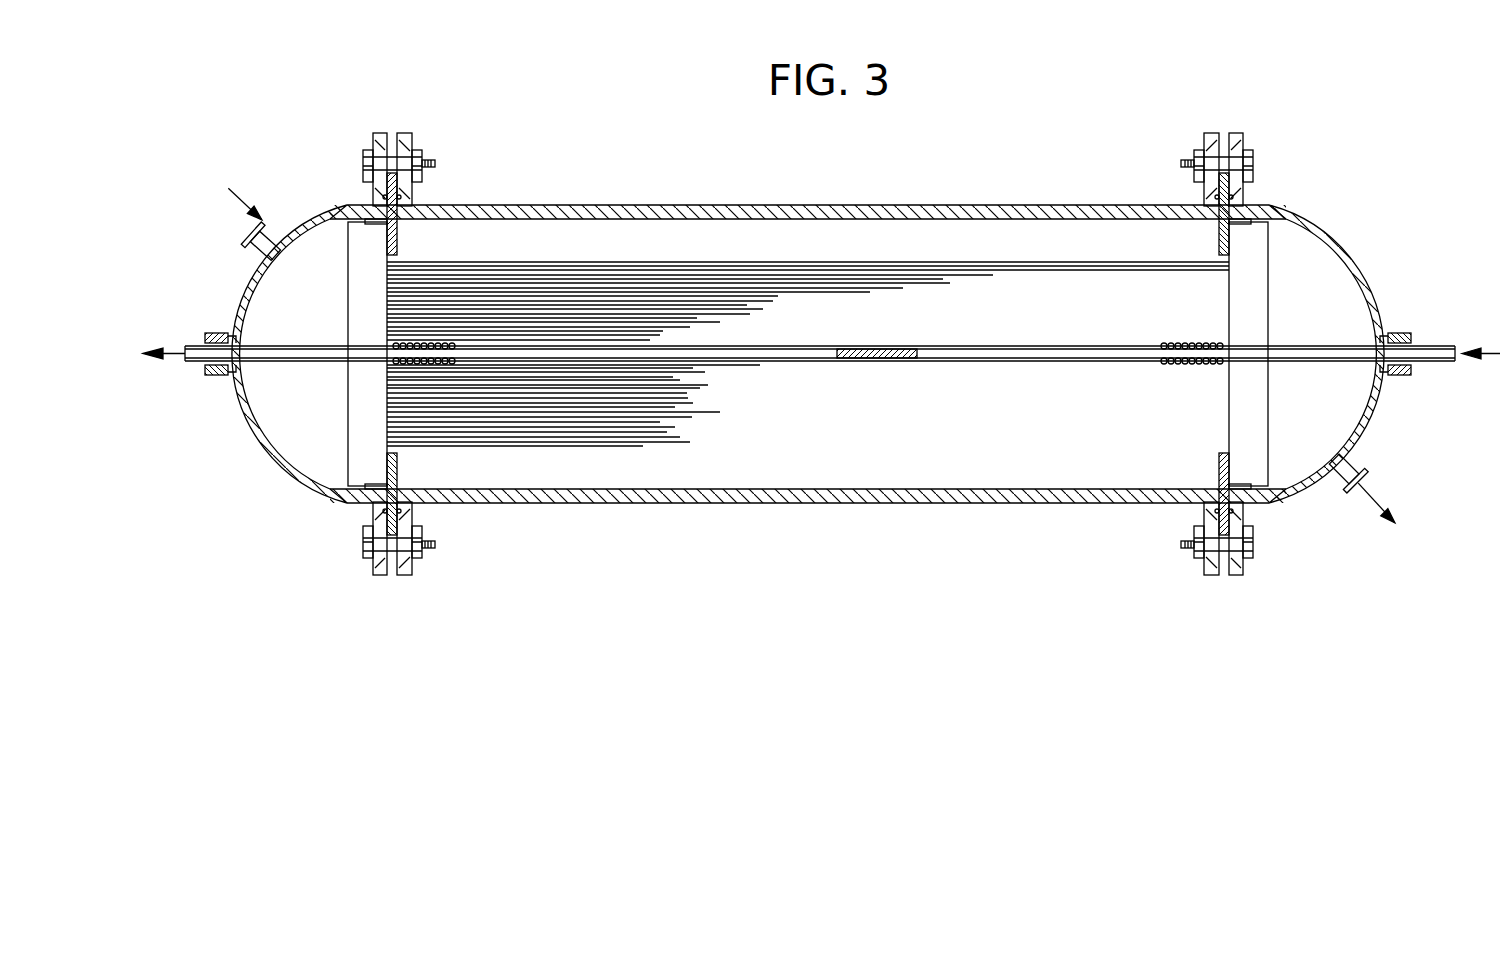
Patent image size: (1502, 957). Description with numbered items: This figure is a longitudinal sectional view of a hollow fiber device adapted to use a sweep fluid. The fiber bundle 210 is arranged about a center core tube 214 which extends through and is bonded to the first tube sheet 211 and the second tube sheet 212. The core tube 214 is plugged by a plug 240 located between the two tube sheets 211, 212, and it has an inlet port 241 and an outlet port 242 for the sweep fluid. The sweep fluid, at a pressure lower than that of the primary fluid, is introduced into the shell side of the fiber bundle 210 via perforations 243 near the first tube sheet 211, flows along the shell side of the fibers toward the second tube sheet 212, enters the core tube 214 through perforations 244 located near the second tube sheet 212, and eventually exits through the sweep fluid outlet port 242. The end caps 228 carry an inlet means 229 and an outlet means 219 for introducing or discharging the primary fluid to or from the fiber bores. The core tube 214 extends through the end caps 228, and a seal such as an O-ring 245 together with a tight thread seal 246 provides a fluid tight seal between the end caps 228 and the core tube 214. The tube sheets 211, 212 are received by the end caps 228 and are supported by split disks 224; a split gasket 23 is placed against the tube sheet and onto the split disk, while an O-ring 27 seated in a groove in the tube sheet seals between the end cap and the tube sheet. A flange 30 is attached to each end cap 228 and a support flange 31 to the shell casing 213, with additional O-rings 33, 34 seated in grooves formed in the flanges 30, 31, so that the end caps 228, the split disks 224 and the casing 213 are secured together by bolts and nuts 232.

The split gasket 23 is at (385, 455).
The O-ring 27 is at (372, 207).
The flange 30 is at (371, 141).
The support flange 31 is at (413, 141).
The O-ring 33 is at (374, 512).
The O-ring 34 is at (412, 512).
The fiber bundle 210 is at (812, 285).
The first tube sheet 211 is at (1263, 323).
The second tube sheet 212 is at (358, 323).
The shell casing 213 is at (890, 205).
The center core tube 214 is at (975, 347).
The outlet means 219 is at (1372, 487).
The split disks 224 is at (403, 478).
The end caps 228 is at (270, 460).
The inlet means 229 is at (256, 232).
The bolts and nuts 232 is at (365, 542).
The plug 240 is at (877, 361).
The inlet port 241 is at (1462, 347).
The outlet port 242 is at (185, 348).
The perforations 243 is at (1193, 347).
The perforations 244 is at (437, 362).
The O-ring 245 is at (216, 365).
The tight thread seal 246 is at (230, 378).